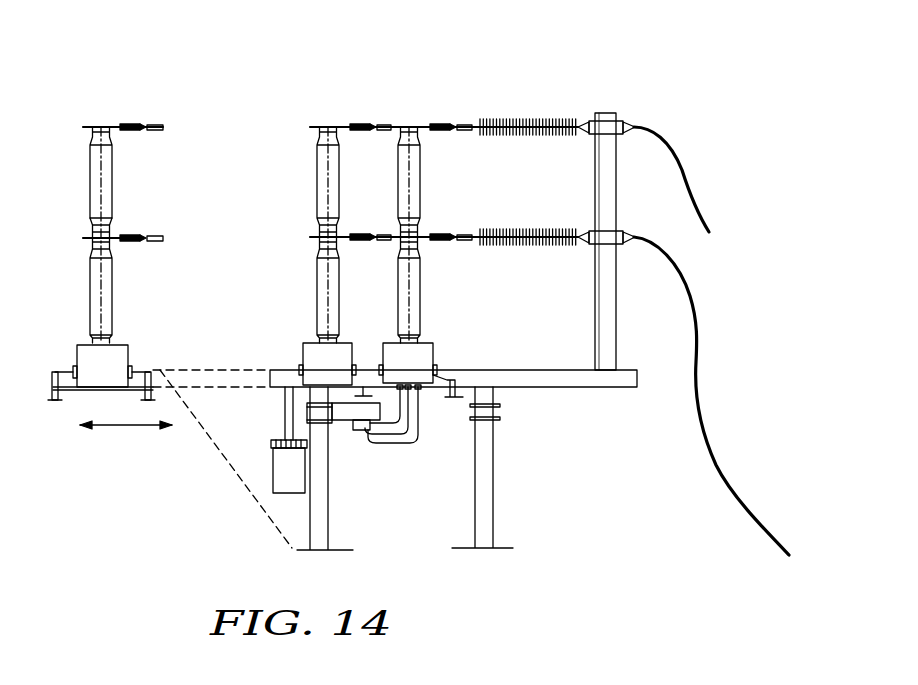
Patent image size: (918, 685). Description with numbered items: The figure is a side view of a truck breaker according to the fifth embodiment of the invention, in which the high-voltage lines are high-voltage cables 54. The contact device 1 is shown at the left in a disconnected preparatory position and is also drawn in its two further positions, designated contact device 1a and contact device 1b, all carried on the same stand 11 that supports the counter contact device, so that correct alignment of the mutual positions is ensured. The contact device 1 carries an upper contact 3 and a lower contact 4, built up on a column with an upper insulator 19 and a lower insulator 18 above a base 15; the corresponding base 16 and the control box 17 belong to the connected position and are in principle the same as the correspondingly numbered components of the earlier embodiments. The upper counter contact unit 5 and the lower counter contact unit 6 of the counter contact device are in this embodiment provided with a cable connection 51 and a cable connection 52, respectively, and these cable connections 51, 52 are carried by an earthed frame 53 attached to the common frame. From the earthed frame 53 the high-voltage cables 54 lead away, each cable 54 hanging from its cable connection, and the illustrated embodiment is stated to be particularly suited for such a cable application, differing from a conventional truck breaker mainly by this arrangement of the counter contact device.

The contact device 1 is at (99, 114).
The contact device in disconnected preparatory position 1a is at (328, 114).
The contact device in connected position 1b is at (408, 114).
The upper contact 3 is at (140, 127).
The lower contact 4 is at (143, 237).
The upper counter contact unit 5 is at (450, 127).
The lower counter contact unit 6 is at (450, 237).
The stand 11 is at (533, 420).
The truck breaker component 15 is at (118, 358).
The truck breaker component 16 is at (423, 353).
The truck breaker component 17 is at (300, 481).
The truck breaker component 18 is at (95, 290).
The truck breaker component 19 is at (95, 185).
The cable connection 51 is at (523, 125).
The cable connection 52 is at (527, 243).
The earthed frame 53 is at (618, 329).
The high-voltage cable 54 is at (690, 184).